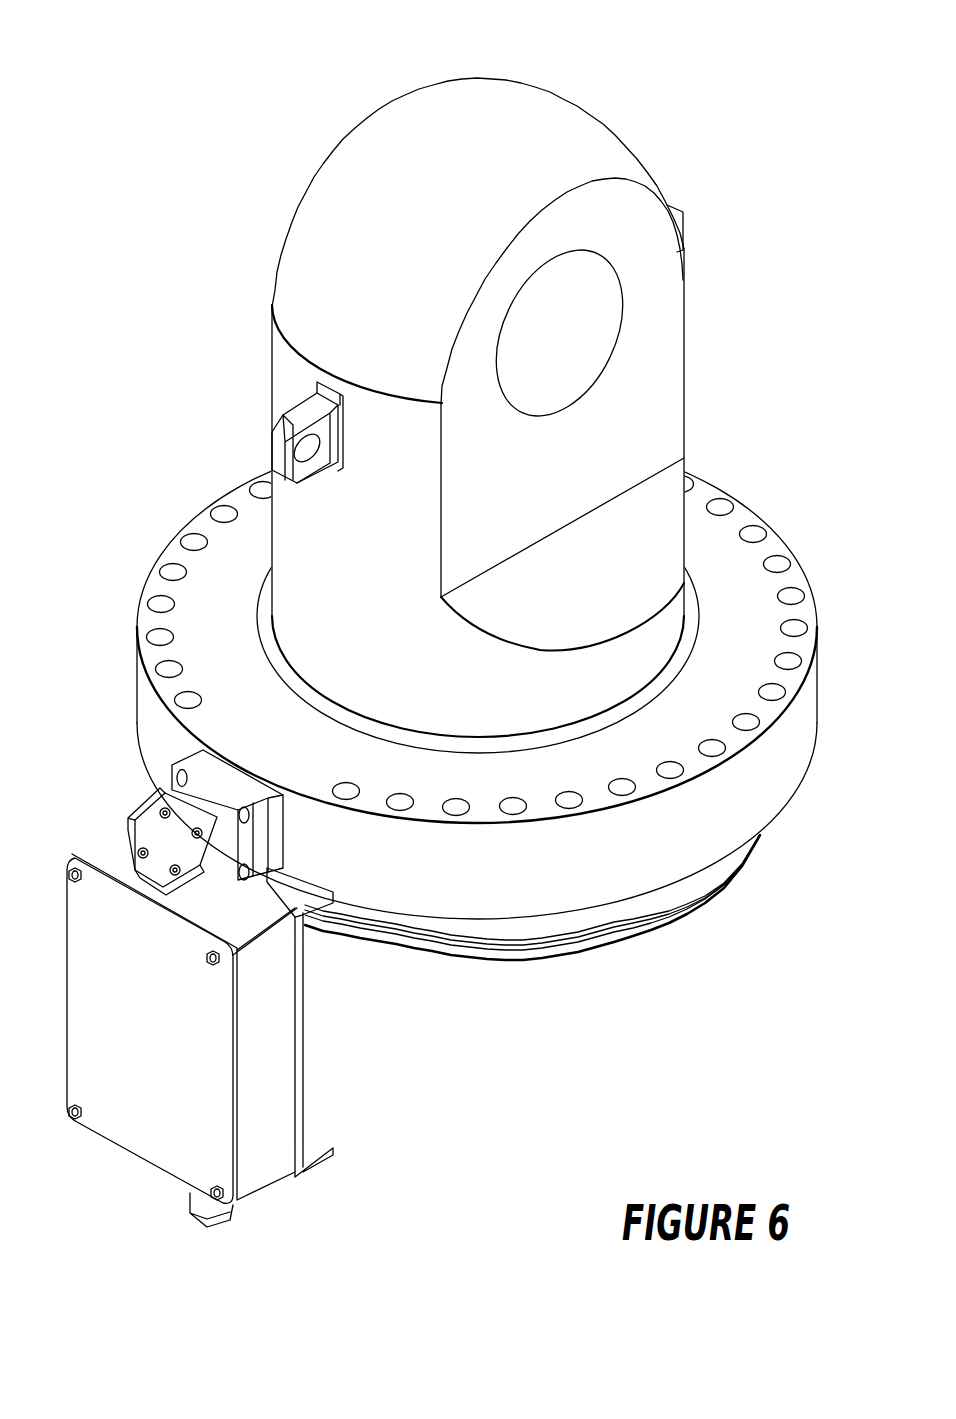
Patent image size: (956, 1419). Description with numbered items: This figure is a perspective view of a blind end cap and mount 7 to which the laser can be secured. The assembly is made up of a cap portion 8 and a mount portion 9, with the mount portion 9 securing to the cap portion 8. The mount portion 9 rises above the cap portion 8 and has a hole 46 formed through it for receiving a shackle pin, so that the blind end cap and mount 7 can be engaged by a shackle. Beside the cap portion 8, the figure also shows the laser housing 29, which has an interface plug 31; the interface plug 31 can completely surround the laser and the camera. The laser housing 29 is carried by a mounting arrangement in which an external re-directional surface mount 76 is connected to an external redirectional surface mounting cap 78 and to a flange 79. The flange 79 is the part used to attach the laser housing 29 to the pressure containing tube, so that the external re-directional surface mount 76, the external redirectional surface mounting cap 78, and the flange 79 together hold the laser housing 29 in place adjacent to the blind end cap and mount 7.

The blind end cap and mount 7 is at (279, 96).
The cap portion 8 is at (742, 578).
The mount portion 9 is at (482, 102).
The hole 46 is at (610, 352).
The external re-directional surface mount 76 is at (197, 800).
The external redirectional surface mounting cap 78 is at (162, 840).
The flange 79 is at (268, 838).
The laser housing 29 is at (272, 1063).
The interface plug 31 is at (190, 1205).